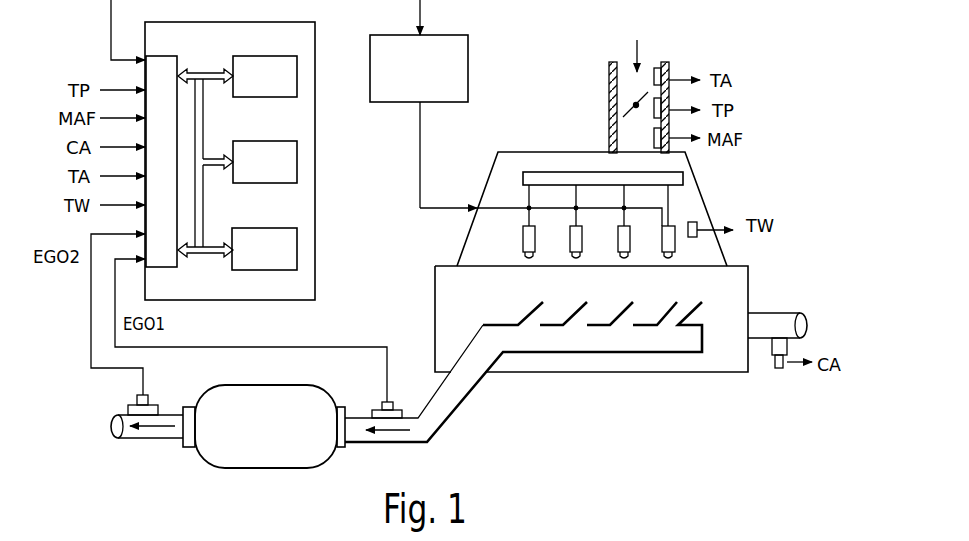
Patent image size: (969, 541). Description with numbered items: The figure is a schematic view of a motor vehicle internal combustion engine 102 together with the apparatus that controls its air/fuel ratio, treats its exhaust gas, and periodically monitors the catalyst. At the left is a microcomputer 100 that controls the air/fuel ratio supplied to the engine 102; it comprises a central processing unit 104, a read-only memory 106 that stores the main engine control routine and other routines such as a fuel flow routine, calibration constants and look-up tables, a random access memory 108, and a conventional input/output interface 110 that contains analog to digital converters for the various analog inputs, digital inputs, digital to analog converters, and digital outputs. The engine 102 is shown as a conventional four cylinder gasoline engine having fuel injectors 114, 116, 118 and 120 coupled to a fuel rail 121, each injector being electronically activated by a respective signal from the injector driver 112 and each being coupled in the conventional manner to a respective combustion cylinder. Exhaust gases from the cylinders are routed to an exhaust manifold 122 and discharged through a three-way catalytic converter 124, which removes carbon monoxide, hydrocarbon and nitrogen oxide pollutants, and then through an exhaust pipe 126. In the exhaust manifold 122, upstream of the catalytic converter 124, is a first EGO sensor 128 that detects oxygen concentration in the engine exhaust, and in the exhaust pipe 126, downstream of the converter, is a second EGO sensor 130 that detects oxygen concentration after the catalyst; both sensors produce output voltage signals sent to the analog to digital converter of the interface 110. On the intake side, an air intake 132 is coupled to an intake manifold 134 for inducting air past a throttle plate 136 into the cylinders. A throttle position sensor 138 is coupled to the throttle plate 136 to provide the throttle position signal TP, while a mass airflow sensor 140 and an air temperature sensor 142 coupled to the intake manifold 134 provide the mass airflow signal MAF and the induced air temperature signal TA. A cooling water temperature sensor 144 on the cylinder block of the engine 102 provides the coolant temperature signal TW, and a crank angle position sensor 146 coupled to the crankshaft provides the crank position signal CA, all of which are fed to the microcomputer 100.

The microcomputer 100 is at (315, 276).
The internal combustion engine 102 is at (583, 373).
The central processing unit 104 is at (300, 60).
The read-only memory 106 is at (300, 146).
The random access memory 108 is at (300, 231).
The input/output interface 110 is at (155, 57).
The injector driver 112 is at (461, 42).
The fuel injector 114 is at (523, 254).
The fuel injector 116 is at (570, 254).
The fuel injector 118 is at (618, 254).
The fuel injector 120 is at (662, 255).
The fuel rail 121 is at (540, 172).
The exhaust manifold 122 is at (474, 336).
The three-way catalytic converter 124 is at (279, 436).
The exhaust pipe 126 is at (150, 438).
The first EGO sensor 128 is at (381, 403).
The second EGO sensor 130 is at (137, 400).
The air intake 132 is at (618, 62).
The intake manifold 134 is at (493, 162).
The throttle plate 136 is at (628, 107).
The throttle position sensor 138 is at (672, 130).
The mass airflow sensor 140 is at (685, 153).
The air temperature sensor 142 is at (660, 62).
The cooling water temperature sensor 144 is at (693, 237).
The crank angle position sensor 146 is at (768, 347).